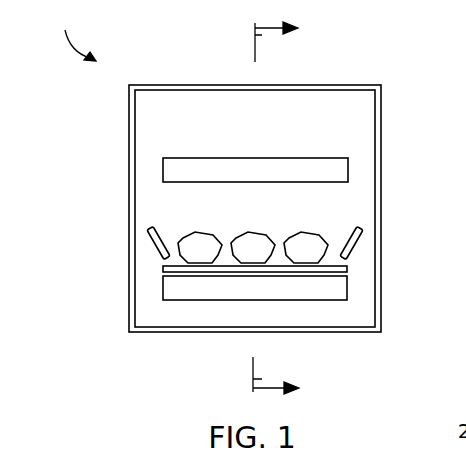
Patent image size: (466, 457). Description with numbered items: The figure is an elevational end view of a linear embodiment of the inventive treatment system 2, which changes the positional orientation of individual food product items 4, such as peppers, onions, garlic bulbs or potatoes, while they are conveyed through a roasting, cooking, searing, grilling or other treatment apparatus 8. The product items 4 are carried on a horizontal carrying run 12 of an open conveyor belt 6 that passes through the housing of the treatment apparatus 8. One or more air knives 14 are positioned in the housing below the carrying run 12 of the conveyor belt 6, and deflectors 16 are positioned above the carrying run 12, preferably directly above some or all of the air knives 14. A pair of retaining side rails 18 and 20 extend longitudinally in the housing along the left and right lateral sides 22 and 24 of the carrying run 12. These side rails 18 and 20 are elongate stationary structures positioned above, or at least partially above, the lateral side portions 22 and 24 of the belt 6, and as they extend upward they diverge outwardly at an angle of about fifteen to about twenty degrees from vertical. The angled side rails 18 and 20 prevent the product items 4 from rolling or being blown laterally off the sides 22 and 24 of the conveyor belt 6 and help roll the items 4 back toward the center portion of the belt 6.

The treatment system 2 is at (186, 205).
The food product items 4 is at (203, 232).
The open conveyor belt 6 is at (350, 268).
The treatment apparatus 8 is at (168, 81).
The horizontal carrying run 12 is at (155, 268).
The air knives 14 is at (240, 300).
The deflectors 16 is at (240, 158).
The left side rail 18 is at (170, 230).
The right side rail 20 is at (343, 240).
The left lateral side 22 is at (146, 250).
The right lateral side 24 is at (364, 250).